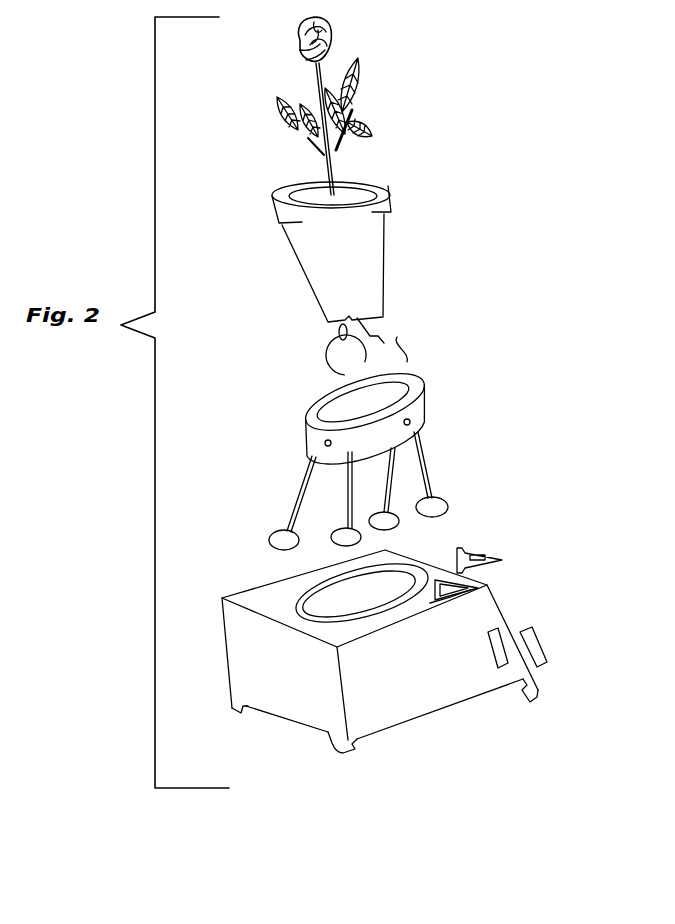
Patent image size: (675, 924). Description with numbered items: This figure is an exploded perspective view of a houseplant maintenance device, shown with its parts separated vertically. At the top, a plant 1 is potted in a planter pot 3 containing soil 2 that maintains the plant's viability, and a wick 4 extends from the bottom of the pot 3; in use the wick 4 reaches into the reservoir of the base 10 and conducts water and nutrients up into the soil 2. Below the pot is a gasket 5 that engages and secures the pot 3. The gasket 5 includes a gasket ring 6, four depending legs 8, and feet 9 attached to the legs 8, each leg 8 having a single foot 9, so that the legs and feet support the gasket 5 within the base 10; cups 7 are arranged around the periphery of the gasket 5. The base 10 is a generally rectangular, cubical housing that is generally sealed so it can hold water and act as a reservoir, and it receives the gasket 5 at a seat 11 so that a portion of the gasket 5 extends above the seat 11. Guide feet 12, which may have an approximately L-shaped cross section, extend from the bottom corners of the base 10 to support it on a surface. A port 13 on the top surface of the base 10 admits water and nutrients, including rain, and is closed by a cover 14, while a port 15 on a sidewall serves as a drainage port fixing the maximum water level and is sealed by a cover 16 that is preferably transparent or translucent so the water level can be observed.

The plant 1 is at (364, 126).
The soil 2 is at (362, 183).
The planter pot 3 is at (378, 240).
The wick 4 is at (374, 338).
The gasket 5 is at (417, 407).
The gasket ring 6 is at (312, 435).
The cups 7 is at (332, 443).
The legs 8 is at (441, 470).
The feet 9 is at (273, 542).
The base 10 is at (225, 655).
The seat 11 is at (303, 602).
The guide feet 12 is at (242, 710).
The port 13 is at (488, 585).
The cover 14 is at (475, 545).
The port 15 is at (488, 648).
The cover 16 is at (545, 645).